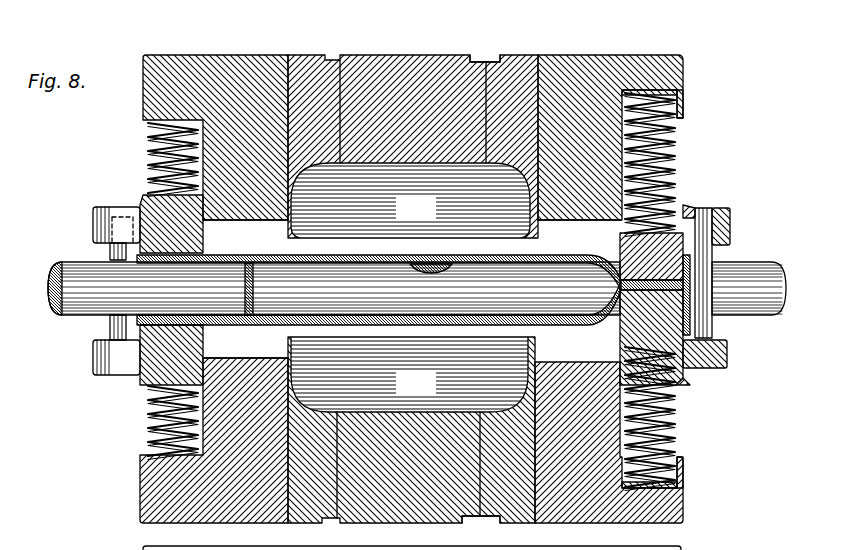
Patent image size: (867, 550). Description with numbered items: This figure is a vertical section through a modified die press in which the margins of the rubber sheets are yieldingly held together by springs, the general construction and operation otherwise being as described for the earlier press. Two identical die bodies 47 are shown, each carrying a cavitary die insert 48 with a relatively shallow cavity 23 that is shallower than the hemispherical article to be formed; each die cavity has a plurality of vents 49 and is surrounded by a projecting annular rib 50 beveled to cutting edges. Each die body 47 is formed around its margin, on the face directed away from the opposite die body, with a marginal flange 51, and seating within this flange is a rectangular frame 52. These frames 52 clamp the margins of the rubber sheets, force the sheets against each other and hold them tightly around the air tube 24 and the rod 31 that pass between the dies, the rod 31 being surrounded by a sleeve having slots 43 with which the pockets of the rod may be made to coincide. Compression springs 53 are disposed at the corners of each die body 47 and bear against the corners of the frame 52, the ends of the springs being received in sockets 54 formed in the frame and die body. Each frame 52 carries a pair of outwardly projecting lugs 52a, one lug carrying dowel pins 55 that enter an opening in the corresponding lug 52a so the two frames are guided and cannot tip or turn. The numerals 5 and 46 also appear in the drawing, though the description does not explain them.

The tube blank 5 is at (50, 251).
The cavity 23 is at (410, 287).
The air tube 24 is at (73, 312).
The rod 31 is at (418, 327).
The slots 43 is at (440, 271).
The notch 46 is at (500, 62).
The die body 47 is at (221, 67).
The cavitary die insert 48 is at (303, 68).
The vents 49 is at (345, 60).
The projecting annular rib 50 is at (288, 353).
The marginal flange 51 is at (683, 104).
The frame 52 is at (143, 197).
The outwardly projecting lugs 52a is at (97, 206).
The compression springs 53 is at (148, 158).
The socket 54 is at (632, 92).
The dowel pins 55 is at (110, 238).